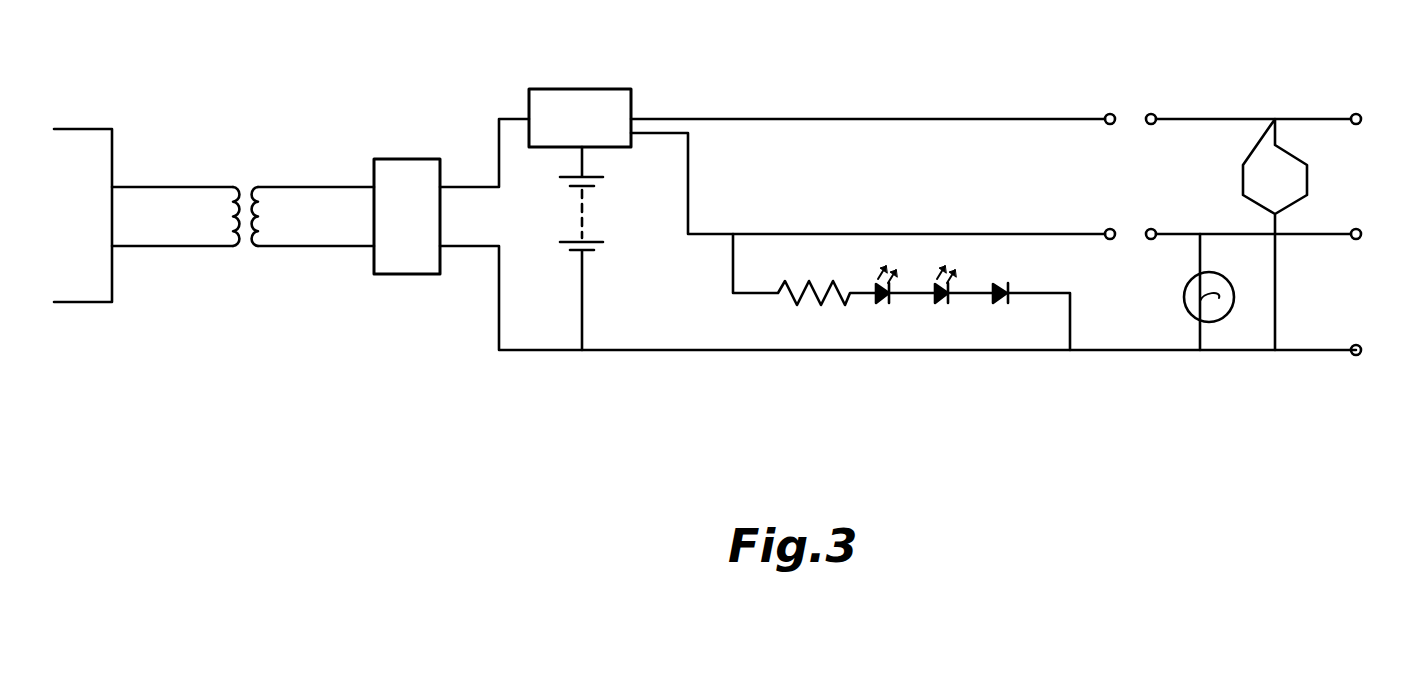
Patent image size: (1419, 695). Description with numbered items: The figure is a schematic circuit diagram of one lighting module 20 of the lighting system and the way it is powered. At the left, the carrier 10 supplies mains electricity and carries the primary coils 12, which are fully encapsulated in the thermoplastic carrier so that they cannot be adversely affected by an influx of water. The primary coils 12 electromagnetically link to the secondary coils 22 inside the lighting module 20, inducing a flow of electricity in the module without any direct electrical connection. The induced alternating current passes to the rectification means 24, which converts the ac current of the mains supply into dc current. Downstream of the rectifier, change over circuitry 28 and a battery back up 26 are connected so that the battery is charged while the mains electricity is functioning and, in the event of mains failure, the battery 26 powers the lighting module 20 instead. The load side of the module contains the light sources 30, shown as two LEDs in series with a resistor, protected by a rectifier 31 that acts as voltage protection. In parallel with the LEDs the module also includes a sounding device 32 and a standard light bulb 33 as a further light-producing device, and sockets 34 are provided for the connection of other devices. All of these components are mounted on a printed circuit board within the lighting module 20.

The carrier 10 is at (80, 278).
The primary coils 12 is at (237, 249).
The secondary coils 22 is at (255, 249).
The rectification means 24 is at (408, 253).
The battery back up 26 is at (595, 213).
The change over circuitry 28 is at (585, 115).
The lighting module 20 is at (602, 368).
The light sources 30 is at (885, 303).
The rectifier 31 is at (1003, 303).
The sounding device 32 is at (1282, 181).
The light bulb 33 is at (1207, 320).
The sockets 34 is at (1151, 113).